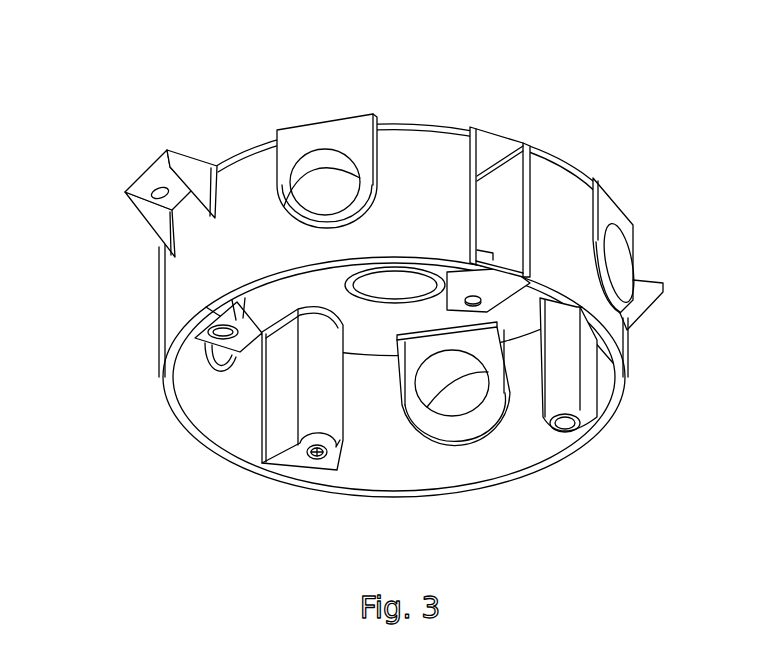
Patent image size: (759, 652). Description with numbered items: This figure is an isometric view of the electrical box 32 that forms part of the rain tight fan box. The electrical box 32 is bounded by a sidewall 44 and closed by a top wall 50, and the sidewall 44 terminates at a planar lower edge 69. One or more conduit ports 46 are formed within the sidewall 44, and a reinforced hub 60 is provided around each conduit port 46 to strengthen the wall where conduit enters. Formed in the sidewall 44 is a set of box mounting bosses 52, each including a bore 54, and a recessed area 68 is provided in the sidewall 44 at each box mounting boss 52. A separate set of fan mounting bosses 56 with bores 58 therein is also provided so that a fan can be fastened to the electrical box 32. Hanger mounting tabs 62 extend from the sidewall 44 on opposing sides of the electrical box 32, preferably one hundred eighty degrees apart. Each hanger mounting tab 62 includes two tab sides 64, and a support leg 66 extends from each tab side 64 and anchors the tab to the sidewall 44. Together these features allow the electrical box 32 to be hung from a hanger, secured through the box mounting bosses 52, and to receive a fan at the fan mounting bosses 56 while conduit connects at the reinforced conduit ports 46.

The electrical box 32 is at (658, 177).
The sidewall 44 is at (406, 204).
The conduit port 46 is at (330, 190).
The top wall 50 is at (361, 339).
The box mounting boss 52 is at (293, 467).
The bore 54 is at (315, 460).
The fan mounting boss 56 is at (585, 423).
The bore 58 is at (562, 430).
The reinforced hub 60 is at (358, 137).
The hanger mounting tab 62 is at (147, 168).
The tab side 64 is at (193, 153).
The support leg 66 is at (160, 216).
The recessed area 68 is at (508, 177).
The planar lower edge 69 is at (615, 363).